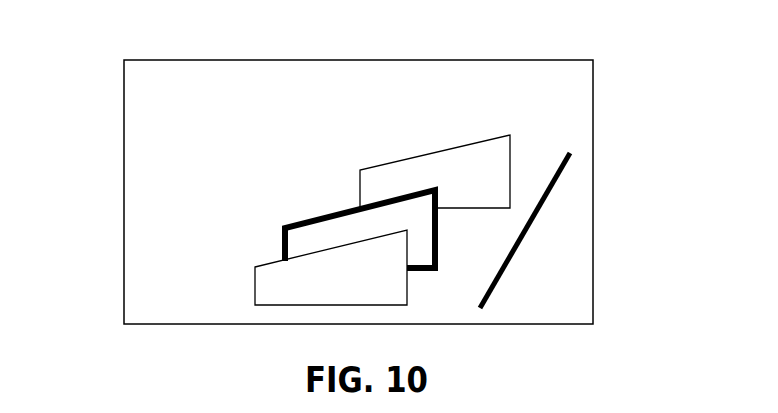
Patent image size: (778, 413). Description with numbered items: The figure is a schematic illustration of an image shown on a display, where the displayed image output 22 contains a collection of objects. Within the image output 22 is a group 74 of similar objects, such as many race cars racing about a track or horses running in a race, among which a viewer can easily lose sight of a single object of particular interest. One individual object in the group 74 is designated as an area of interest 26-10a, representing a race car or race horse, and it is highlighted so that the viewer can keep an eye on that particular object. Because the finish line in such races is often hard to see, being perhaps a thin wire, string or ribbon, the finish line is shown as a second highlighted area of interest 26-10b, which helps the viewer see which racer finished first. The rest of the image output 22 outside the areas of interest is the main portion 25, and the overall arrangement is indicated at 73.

The display arrangement 73 is at (92, 168).
The image output 22 is at (581, 88).
The group of objects 74 is at (311, 120).
The main portion 25 is at (562, 134).
The area of interest 26-10a is at (438, 222).
The highlighted area of interest (finish line) 26-10b is at (505, 277).